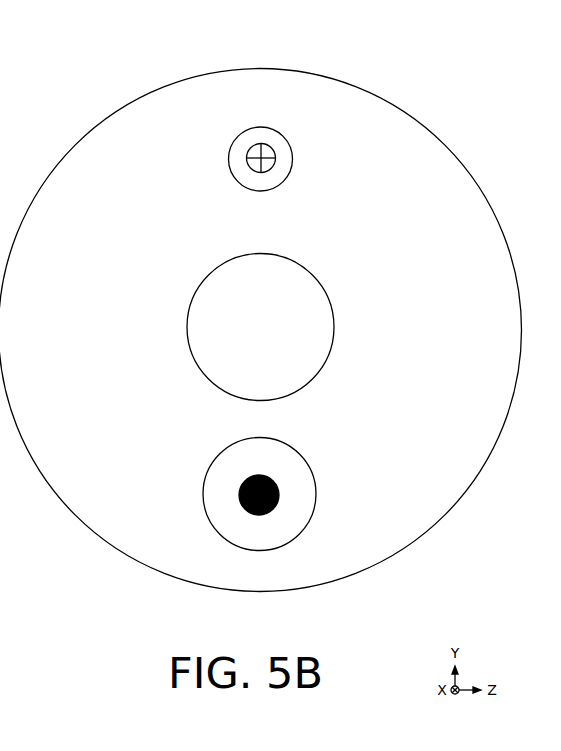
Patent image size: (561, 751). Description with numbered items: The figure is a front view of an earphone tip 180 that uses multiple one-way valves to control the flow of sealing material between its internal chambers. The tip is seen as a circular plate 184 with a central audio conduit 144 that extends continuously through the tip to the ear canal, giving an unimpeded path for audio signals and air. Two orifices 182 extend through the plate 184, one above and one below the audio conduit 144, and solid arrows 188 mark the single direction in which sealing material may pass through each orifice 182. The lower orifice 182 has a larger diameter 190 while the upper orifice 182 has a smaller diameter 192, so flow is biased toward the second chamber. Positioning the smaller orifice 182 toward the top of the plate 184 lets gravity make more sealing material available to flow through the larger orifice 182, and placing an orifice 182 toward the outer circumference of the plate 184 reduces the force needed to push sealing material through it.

The earphone tip 180 is at (263, 315).
The orifice 182 is at (304, 152).
The plate 184 is at (82, 333).
The solid arrows 188 is at (270, 168).
The audio conduit 144 is at (241, 337).
The larger diameter 190 is at (188, 438).
The diameter 192 is at (192, 127).